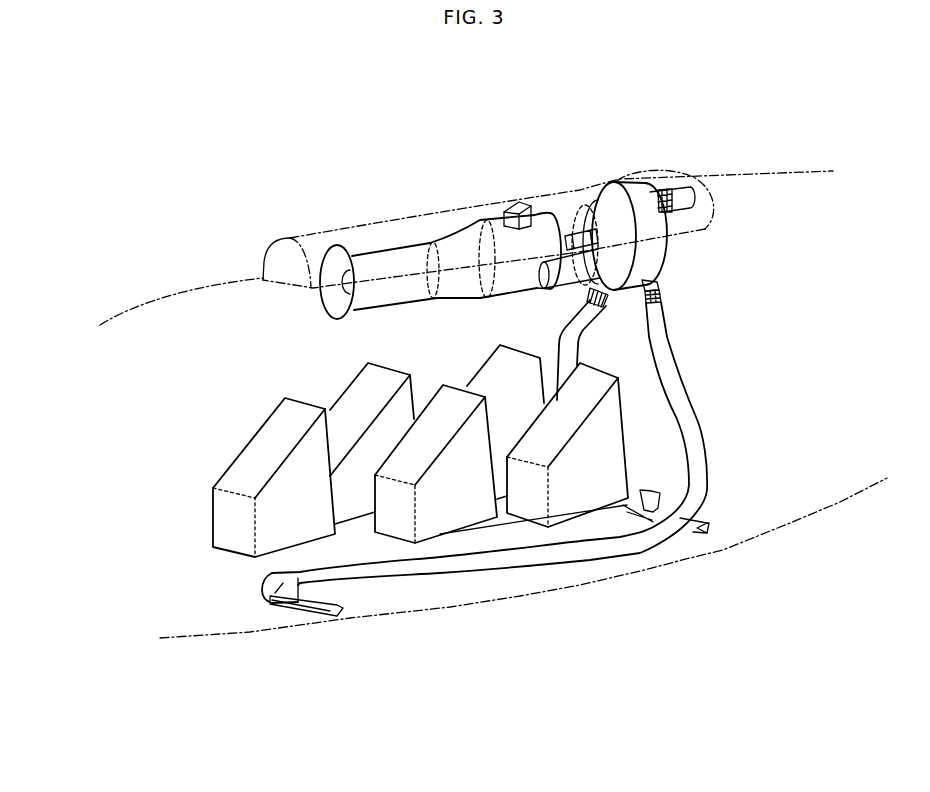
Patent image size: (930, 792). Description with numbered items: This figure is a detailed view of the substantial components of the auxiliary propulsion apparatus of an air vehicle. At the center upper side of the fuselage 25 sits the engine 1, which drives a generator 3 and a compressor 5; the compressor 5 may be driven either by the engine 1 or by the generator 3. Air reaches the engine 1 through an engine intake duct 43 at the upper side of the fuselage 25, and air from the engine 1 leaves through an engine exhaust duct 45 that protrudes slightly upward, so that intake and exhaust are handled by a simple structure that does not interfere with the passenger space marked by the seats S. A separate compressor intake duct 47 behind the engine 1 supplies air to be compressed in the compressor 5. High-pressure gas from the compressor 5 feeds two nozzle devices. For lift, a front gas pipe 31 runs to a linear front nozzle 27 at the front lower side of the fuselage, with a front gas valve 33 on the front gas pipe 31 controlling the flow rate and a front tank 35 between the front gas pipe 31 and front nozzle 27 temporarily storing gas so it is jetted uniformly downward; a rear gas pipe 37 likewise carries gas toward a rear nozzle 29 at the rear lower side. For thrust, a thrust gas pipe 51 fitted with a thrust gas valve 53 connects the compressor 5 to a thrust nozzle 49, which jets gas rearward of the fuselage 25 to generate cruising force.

The engine 1 is at (397, 258).
The generator 3 is at (603, 305).
The compressor 5 is at (632, 185).
The fuselage 25 is at (150, 304).
The front nozzle 27 is at (323, 614).
The rear nozzle 29 is at (710, 530).
The front gas pipe 31 is at (440, 572).
The front gas valve 33 is at (662, 292).
The front tank 35 is at (267, 603).
The rear gas pipe 37 is at (578, 325).
The engine intake duct 43 is at (278, 263).
The engine exhaust duct 45 is at (518, 200).
The compressor intake duct 47 is at (577, 198).
The thrust nozzle 49 is at (710, 195).
The thrust gas pipe 51 is at (685, 187).
The thrust gas valve 53 is at (665, 188).
The seats S is at (363, 388).